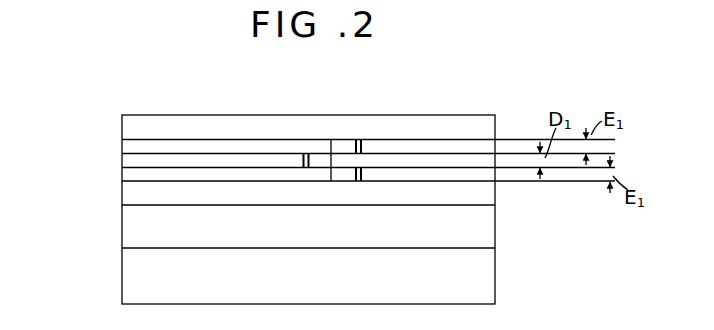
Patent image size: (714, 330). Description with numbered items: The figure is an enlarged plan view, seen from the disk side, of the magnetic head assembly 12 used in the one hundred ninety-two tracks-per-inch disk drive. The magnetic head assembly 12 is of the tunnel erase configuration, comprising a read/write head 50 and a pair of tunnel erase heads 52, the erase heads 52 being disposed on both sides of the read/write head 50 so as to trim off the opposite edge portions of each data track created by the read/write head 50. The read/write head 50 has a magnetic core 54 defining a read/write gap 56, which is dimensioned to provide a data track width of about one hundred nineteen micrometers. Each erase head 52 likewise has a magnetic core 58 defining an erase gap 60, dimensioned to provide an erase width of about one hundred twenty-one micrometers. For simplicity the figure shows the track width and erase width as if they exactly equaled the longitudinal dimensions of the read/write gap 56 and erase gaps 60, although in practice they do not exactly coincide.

The magnetic head assembly 12 is at (100, 121).
The read/write head 50 is at (139, 158).
The tunnel erase heads 52 is at (464, 142).
The magnetic core 54 is at (208, 160).
The read/write gap 56 is at (312, 161).
The magnetic core 58 is at (433, 147).
The erase gap 60 is at (363, 141).